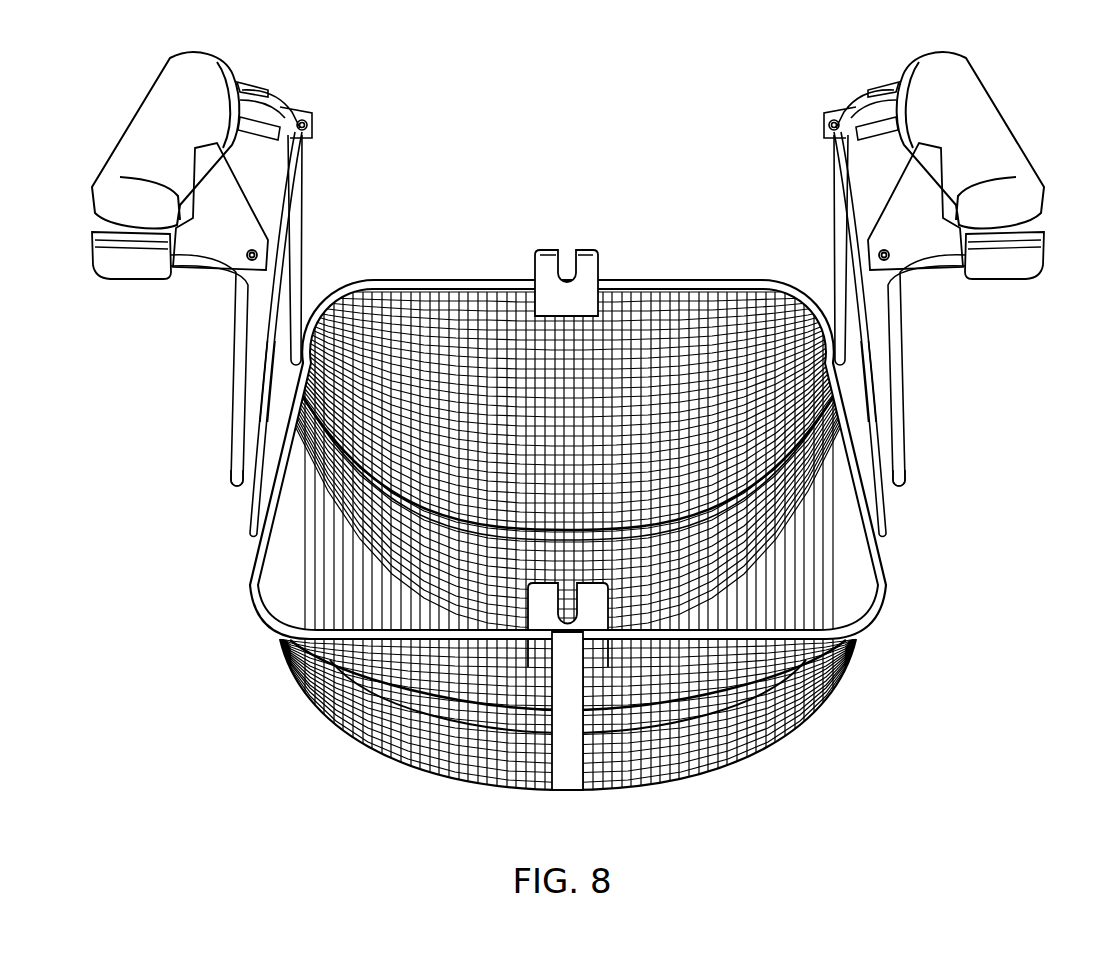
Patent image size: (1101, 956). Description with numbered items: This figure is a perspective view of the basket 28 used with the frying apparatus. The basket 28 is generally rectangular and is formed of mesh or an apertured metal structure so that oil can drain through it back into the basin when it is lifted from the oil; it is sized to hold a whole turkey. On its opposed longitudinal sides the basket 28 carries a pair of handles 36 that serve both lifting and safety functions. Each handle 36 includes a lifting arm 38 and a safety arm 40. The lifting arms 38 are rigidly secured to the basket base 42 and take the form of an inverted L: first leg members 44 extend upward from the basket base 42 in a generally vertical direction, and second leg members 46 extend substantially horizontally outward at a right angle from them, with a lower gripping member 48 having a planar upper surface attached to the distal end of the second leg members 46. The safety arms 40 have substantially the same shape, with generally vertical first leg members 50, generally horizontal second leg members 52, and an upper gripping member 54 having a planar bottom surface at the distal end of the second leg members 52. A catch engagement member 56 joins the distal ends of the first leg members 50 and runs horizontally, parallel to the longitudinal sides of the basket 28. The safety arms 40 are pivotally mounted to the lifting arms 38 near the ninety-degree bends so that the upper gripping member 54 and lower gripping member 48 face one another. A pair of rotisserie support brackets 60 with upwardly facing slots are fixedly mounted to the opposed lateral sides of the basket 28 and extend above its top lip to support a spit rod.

The basket 28 is at (692, 137).
The handle 36 is at (112, 290).
The lifting arm 38 is at (307, 262).
The safety arm 40 is at (225, 420).
The basket base 42 is at (872, 600).
The first leg member 44 is at (300, 288).
The second leg member 46 is at (195, 265).
The lower gripping member 48 is at (1023, 242).
The first leg member 50 is at (232, 462).
The second leg member 52 is at (273, 102).
The upper gripping member 54 is at (153, 96).
The catch engagement member 56 is at (267, 385).
The rotisserie support bracket 60 is at (590, 262).